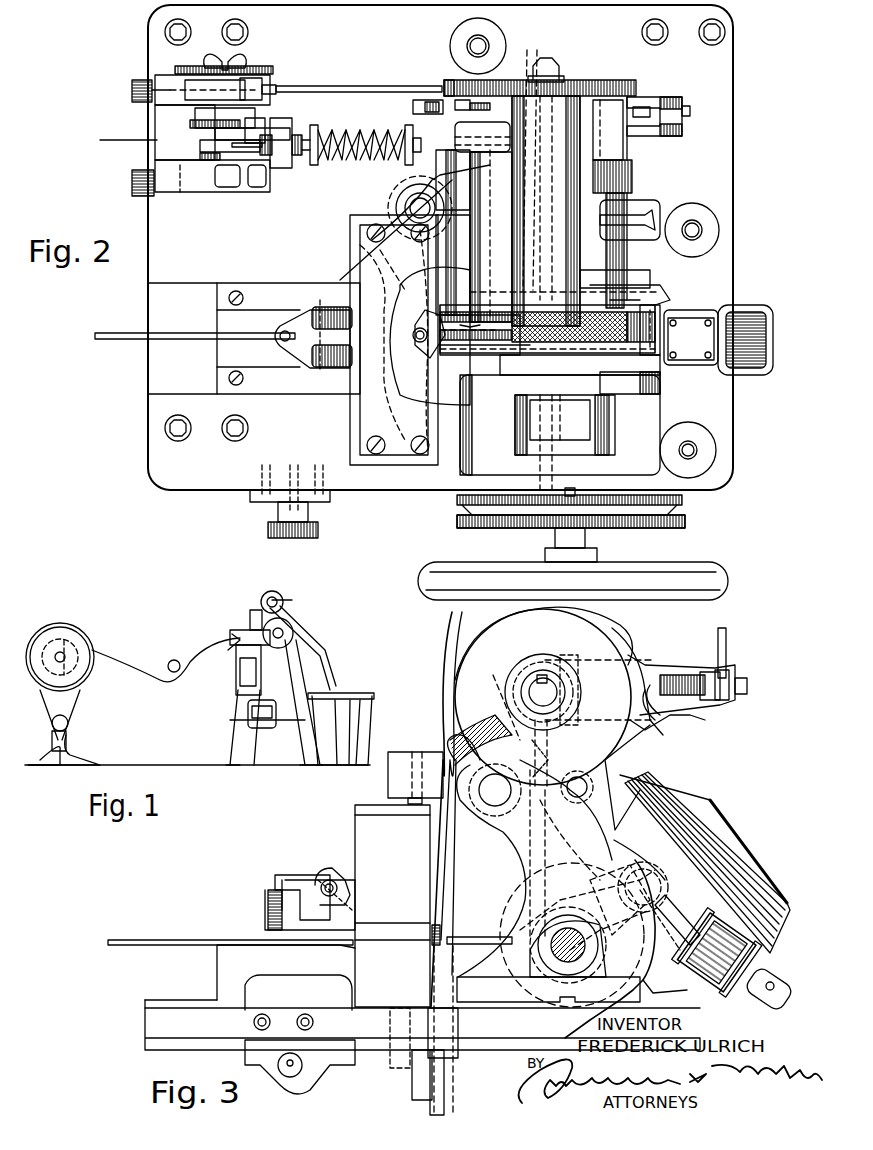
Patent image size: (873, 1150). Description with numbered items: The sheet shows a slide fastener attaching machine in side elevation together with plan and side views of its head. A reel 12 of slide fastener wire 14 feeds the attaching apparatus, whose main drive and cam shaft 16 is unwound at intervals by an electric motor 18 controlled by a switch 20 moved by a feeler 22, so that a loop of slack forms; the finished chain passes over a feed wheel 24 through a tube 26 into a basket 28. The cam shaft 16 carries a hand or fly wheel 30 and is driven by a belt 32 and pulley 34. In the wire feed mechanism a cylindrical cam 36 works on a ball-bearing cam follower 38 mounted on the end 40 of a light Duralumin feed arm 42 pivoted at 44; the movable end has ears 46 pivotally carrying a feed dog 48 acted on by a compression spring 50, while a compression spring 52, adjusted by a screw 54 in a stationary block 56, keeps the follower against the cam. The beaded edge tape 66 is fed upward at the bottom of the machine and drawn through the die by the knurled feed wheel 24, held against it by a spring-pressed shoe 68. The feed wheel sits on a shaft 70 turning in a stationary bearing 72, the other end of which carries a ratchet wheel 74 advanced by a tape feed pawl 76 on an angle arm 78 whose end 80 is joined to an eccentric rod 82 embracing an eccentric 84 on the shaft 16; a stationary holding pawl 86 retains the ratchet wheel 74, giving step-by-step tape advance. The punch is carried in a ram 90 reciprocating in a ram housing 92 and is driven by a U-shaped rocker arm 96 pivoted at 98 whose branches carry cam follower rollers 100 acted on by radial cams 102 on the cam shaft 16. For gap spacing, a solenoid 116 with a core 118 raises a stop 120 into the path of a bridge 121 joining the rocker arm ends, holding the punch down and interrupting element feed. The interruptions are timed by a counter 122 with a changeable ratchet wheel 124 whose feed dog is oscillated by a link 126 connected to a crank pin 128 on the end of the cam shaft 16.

In FIG. 1, the reel 12 is at (62, 624).
In FIG. 2, the slide fastener wire 14 is at (101, 341).
In FIG. 1, the slide fastener wire 14 is at (110, 652).
In FIG. 3, the slide fastener wire 14 is at (162, 942).
In FIG. 2, the main drive and cam shaft 16 is at (590, 548).
In FIG. 1, the main drive and cam shaft 16 is at (284, 630).
In FIG. 3, the main drive and cam shaft 16 is at (563, 968).
In FIG. 1, the electric motor 18 is at (50, 741).
In FIG. 1, the switch 20 is at (228, 656).
In FIG. 1, the feeler 22 is at (175, 660).
In FIG. 2, the feed wheel 24 is at (648, 282).
In FIG. 1, the feed wheel 24 is at (274, 592).
In FIG. 3, the feed wheel 24 is at (608, 633).
In FIG. 1, the tube 26 is at (312, 648).
In FIG. 3, the tube 26 is at (718, 840).
In FIG. 1, the basket 28 is at (350, 692).
In FIG. 2, the hand wheel or fly wheel 30 is at (728, 580).
In FIG. 2, the belt 32 is at (682, 508).
In FIG. 2, the pulley 34 is at (685, 525).
In FIG. 2, the cylindrical cam 36 is at (620, 160).
In FIG. 2, the ball-bearing cam follower 38 is at (537, 162).
In FIG. 2, the end of feed arm 40 is at (493, 130).
In FIG. 2, the feed arm 42 is at (436, 180).
In FIG. 2, the pivot 44 is at (410, 205).
In FIG. 2, the ears 46 is at (320, 310).
In FIG. 3, the ears 46 is at (333, 876).
In FIG. 2, the feed dog 48 is at (397, 360).
In FIG. 3, the feed dog 48 is at (298, 878).
In FIG. 2, the compression spring 50 is at (283, 345).
In FIG. 3, the compression spring 50 is at (266, 902).
In FIG. 2, the compression spring 52 is at (372, 124).
In FIG. 2, the screw 54 is at (300, 140).
In FIG. 2, the stationary block 56 is at (290, 122).
In FIG. 2, the beaded edge tape 66 is at (473, 351).
In FIG. 3, the beaded edge tape 66 is at (446, 889).
In FIG. 3, the spring-pressed shoe 68 is at (640, 667).
In FIG. 2, the shaft 70 is at (548, 60).
In FIG. 3, the shaft 70 is at (540, 690).
In FIG. 2, the stationary bearing 72 is at (555, 228).
In FIG. 2, the ratchet wheel 74 is at (588, 82).
In FIG. 3, the ratchet wheel 74 is at (455, 708).
In FIG. 2, the tape feed pawl 76 is at (446, 90).
In FIG. 3, the tape feed pawl 76 is at (442, 725).
In FIG. 2, the angle arm 78 is at (445, 98).
In FIG. 3, the angle arm 78 is at (503, 698).
In FIG. 2, the end of angle arm 80 is at (646, 98).
In FIG. 3, the end of angle arm 80 is at (672, 720).
In FIG. 3, the eccentric rod 82 is at (640, 772).
In FIG. 3, the eccentric 84 is at (563, 918).
In FIG. 3, the stationary holding pawl 86 is at (554, 830).
In FIG. 2, the ram 90 is at (418, 370).
In FIG. 3, the ram 90 is at (400, 808).
In FIG. 2, the ram housing 92 is at (390, 420).
In FIG. 3, the ram housing 92 is at (355, 810).
In FIG. 2, the rocker arm 96 is at (398, 368).
In FIG. 3, the pivot 98 is at (495, 806).
In FIG. 2, the cam follower rollers 100 is at (640, 300).
In FIG. 3, the cam follower rollers 100 is at (650, 880).
In FIG. 2, the radial cams 102 is at (600, 290).
In FIG. 3, the radial cams 102 is at (660, 990).
In FIG. 2, the solenoid 116 is at (742, 374).
In FIG. 3, the solenoid 116 is at (744, 932).
In FIG. 3, the core 118 is at (754, 995).
In FIG. 2, the stop 120 is at (675, 338).
In FIG. 3, the stop 120 is at (673, 915).
In FIG. 2, the bridge 121 is at (655, 325).
In FIG. 3, the bridge 121 is at (660, 895).
In FIG. 2, the counter 122 is at (162, 116).
In FIG. 2, the changeable ratchet wheel 124 is at (257, 68).
In FIG. 2, the link 126 is at (350, 86).
In FIG. 3, the crank pin 128 is at (585, 975).